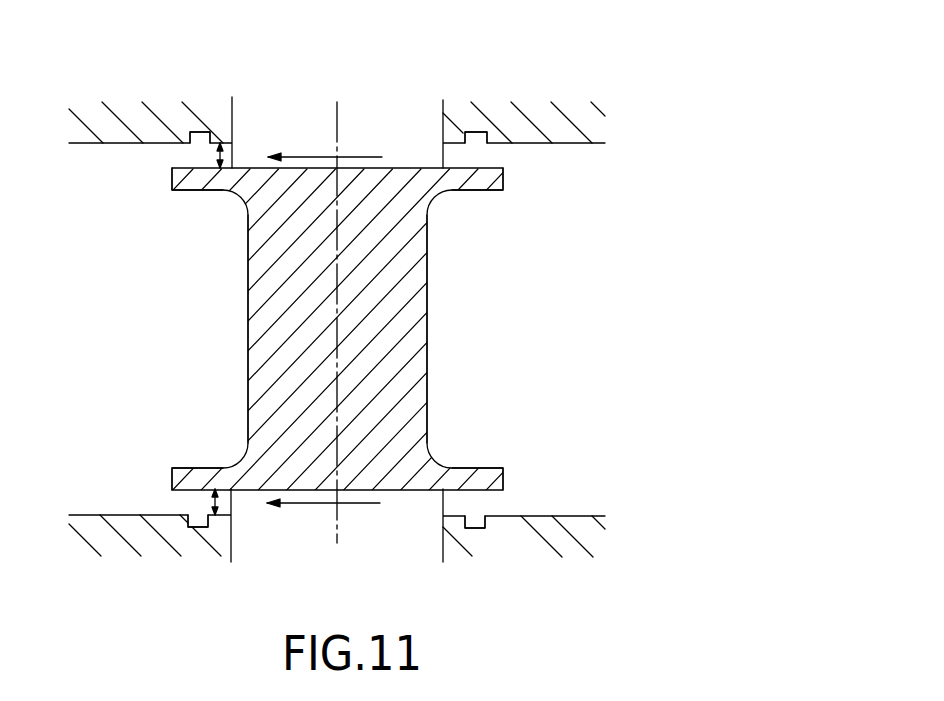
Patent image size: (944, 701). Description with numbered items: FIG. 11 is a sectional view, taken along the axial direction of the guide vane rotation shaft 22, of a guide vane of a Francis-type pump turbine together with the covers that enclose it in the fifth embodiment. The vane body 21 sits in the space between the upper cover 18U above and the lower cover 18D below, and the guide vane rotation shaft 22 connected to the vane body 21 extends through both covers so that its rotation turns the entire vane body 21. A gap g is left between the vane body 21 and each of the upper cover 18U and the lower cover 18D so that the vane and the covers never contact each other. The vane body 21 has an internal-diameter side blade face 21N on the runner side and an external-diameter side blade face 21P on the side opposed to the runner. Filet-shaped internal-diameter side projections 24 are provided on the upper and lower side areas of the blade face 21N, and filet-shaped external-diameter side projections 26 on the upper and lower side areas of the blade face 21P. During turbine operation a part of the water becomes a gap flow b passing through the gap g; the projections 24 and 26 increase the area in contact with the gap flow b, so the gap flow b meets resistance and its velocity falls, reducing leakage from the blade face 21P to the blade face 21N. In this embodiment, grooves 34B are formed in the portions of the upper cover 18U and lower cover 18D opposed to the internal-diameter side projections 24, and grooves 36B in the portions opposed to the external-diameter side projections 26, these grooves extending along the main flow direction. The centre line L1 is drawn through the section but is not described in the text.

The vane body 21 is at (427, 335).
The external-diameter side blade face 21P is at (427, 275).
The internal-diameter side blade face 21N is at (247, 305).
The internal-diameter side projection 24 is at (182, 182).
The external-diameter side projection 26 is at (493, 182).
The upper cover 18U is at (213, 113).
The lower cover 18D is at (197, 540).
The guide vane rotation shaft 22 is at (415, 113).
The groove 34B is at (190, 144).
The groove 36B is at (478, 143).
The gap g is at (232, 155).
The gap flow b is at (324, 330).
The center line L1 is at (338, 112).